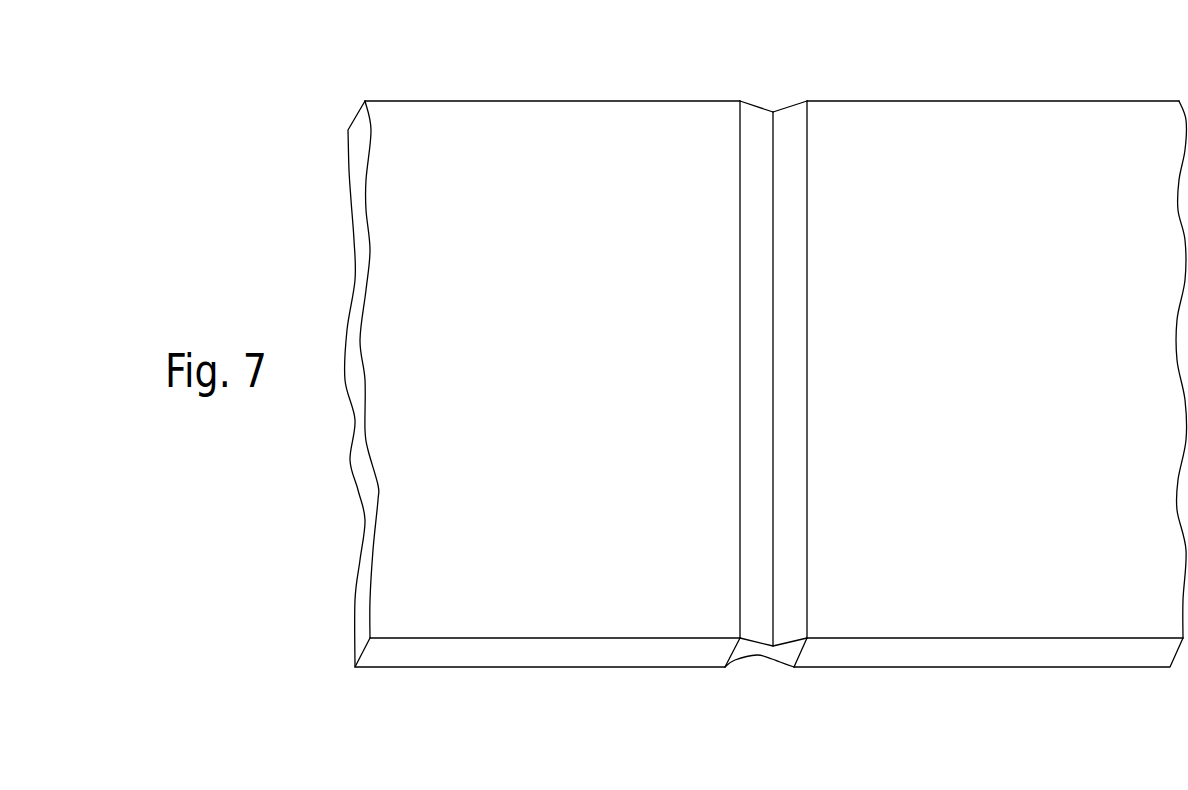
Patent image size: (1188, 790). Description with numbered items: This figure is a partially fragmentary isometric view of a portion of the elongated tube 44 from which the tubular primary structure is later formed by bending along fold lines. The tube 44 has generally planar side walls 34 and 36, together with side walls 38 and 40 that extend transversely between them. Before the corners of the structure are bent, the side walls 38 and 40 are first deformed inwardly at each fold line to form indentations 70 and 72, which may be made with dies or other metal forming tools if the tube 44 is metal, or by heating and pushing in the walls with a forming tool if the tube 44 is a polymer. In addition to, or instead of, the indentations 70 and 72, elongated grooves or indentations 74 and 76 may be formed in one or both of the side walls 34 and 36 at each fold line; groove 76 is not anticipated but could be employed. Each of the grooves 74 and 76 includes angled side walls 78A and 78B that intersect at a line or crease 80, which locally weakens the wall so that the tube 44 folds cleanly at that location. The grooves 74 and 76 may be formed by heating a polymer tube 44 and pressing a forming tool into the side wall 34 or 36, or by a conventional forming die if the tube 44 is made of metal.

The side wall 34 is at (542, 353).
The side wall 36 is at (378, 668).
The side wall 38 is at (492, 653).
The side wall 40 is at (583, 100).
The elongated tube 44 is at (1005, 100).
The indentation 70 is at (794, 424).
The indentation 72 is at (779, 110).
The elongated groove 74 is at (775, 153).
The elongated groove 76 is at (780, 662).
The angled side wall 78A is at (756, 609).
The angled side wall 78B is at (800, 602).
The crease 80 is at (772, 575).